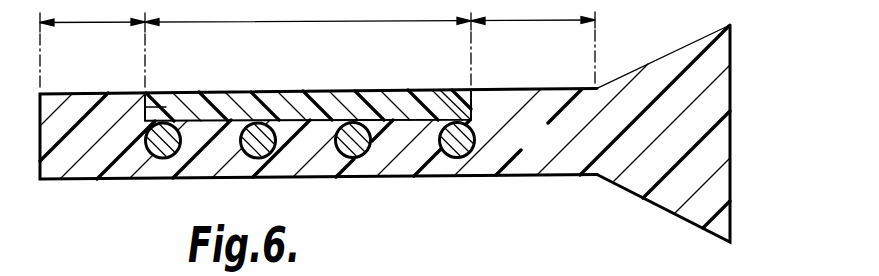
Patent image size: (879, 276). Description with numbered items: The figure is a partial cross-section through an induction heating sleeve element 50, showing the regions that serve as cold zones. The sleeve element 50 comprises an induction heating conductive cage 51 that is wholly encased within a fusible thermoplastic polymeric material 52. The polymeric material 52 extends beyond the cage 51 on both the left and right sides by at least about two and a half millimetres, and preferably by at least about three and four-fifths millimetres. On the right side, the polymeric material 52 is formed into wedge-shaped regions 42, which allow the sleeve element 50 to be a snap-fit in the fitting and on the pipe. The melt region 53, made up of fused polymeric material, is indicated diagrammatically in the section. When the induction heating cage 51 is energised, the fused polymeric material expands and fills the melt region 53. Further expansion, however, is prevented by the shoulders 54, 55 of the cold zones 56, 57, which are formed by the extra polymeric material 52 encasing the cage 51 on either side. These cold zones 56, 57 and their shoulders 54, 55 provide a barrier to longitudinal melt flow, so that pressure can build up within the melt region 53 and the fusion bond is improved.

The wedge-shaped regions 42 is at (695, 163).
The induction heating sleeve element 50 is at (320, 182).
The induction heating conductive cage 51 is at (163, 148).
The fusible thermoplastic polymeric material 52 is at (558, 153).
The melt region 53 is at (328, 102).
The shoulder 54 is at (165, 107).
The shoulder 55 is at (451, 110).
The cold zone 56 is at (113, 100).
The cold zone 57 is at (548, 97).